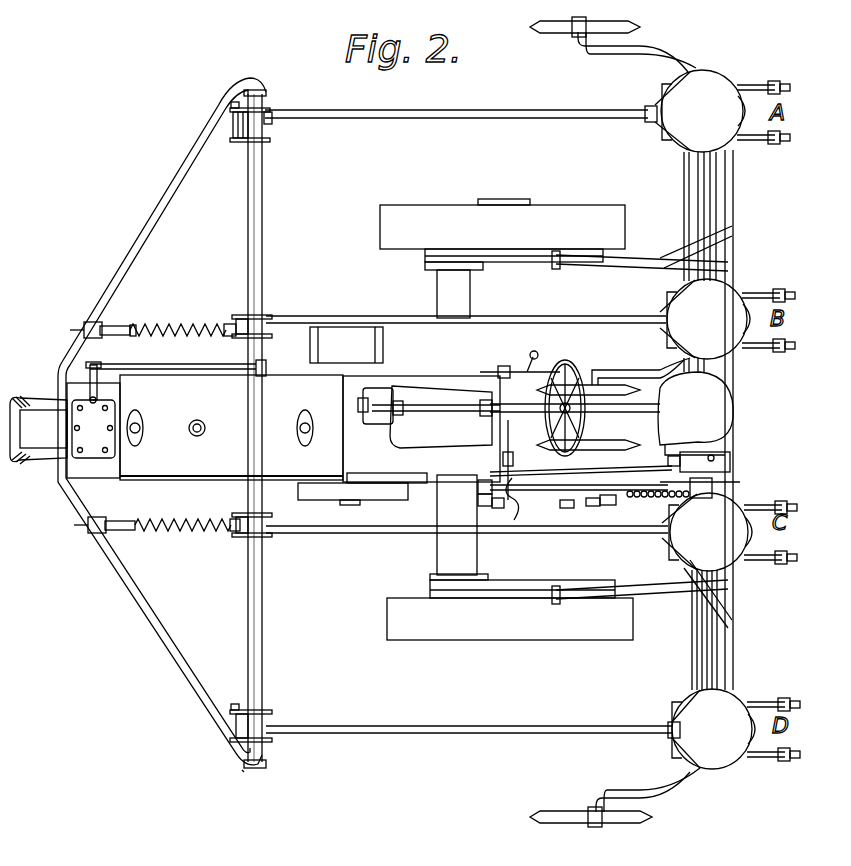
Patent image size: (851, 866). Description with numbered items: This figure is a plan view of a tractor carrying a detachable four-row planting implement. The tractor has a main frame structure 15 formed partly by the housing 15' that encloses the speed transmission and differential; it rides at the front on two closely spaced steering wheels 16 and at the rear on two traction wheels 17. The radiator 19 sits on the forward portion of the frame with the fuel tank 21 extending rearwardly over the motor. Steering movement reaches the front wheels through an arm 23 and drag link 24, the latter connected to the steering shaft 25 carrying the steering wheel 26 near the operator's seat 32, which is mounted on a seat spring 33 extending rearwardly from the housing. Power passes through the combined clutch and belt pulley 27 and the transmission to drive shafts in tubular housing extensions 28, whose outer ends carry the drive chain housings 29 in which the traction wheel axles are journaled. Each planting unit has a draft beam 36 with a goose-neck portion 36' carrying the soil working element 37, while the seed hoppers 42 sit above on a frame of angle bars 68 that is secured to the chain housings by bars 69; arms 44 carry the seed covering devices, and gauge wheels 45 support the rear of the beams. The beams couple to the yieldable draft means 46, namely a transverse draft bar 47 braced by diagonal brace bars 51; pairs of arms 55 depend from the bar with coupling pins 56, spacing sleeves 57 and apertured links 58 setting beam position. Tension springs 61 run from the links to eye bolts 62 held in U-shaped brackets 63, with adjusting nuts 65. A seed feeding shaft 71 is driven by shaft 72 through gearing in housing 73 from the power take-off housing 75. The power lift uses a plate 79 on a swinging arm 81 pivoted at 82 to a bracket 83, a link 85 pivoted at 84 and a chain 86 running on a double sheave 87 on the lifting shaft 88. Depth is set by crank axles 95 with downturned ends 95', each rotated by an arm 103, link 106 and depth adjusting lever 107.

The main frame structure 15 is at (231, 441).
The housing 15' is at (421, 412).
The steering wheels 16 is at (50, 424).
The traction wheels 17 is at (380, 208).
The radiator 19 is at (120, 478).
The fuel tank 21 is at (262, 368).
The arm 23 is at (88, 366).
The drag link 24 is at (160, 364).
The steering shaft 25 is at (440, 412).
The steering wheel 26 is at (560, 364).
The combined clutch and belt pulley 27 is at (316, 327).
The tubular housing extensions 28 is at (437, 294).
The drive chain housings 29 is at (528, 258).
The operator's seat 32 is at (720, 448).
The seat spring 33 is at (662, 405).
The draft beam 36 is at (468, 436).
The goose-neck portion 36' is at (629, 440).
The soil working element 37 is at (660, 100).
The seed hopper 42 is at (735, 140).
The arms 44 is at (748, 84).
The gauge wheels 45 is at (532, 32).
The yieldable hitch or draft transmitting means 46 is at (222, 770).
The draft bar 47 is at (248, 245).
The diagonal brace bars 51 is at (143, 228).
The arms 55 is at (230, 110).
The coupling pin 56 is at (238, 142).
The spacing sleeve 57 is at (272, 120).
The apertured link 58 is at (230, 336).
The tension spring 61 is at (190, 326).
The eye bolt 62 is at (122, 326).
The U-shaped brackets 63 is at (100, 326).
The externally grooved nut 65 is at (138, 326).
The angle bars 68 is at (720, 238).
The bars 69 is at (616, 265).
The seed feeding shaft 71 is at (710, 240).
The shaft 72 is at (540, 487).
The housing 73 is at (730, 464).
The power take-off housing 75 is at (410, 488).
The plate 79 is at (506, 500).
The swinging arm 81 is at (492, 504).
The pivotal connection 82 is at (484, 508).
The bracket 83 is at (478, 488).
The pivotal connection 84 is at (516, 500).
The link 85 is at (590, 476).
The chain 86 is at (640, 497).
The double sheave 87 is at (715, 488).
The lifting shaft 88 is at (710, 630).
The crank axles 95 is at (686, 420).
The downwardly turned ends 95' is at (628, 422).
The arm 103 is at (596, 506).
The link 106 is at (605, 506).
The depth adjusting lever 107 is at (568, 508).